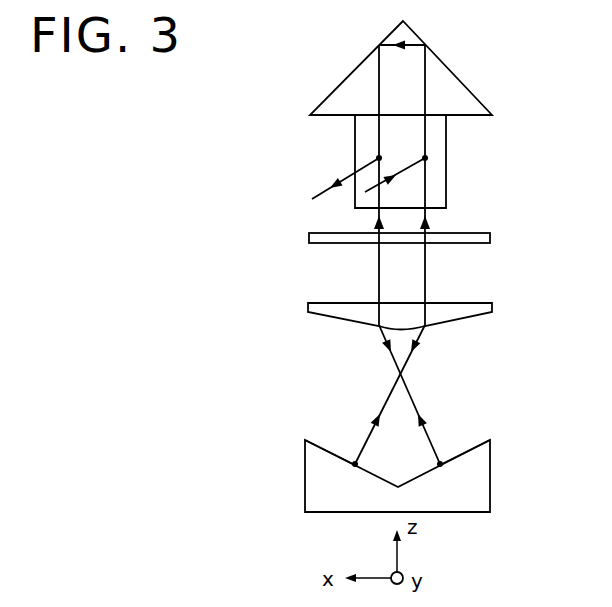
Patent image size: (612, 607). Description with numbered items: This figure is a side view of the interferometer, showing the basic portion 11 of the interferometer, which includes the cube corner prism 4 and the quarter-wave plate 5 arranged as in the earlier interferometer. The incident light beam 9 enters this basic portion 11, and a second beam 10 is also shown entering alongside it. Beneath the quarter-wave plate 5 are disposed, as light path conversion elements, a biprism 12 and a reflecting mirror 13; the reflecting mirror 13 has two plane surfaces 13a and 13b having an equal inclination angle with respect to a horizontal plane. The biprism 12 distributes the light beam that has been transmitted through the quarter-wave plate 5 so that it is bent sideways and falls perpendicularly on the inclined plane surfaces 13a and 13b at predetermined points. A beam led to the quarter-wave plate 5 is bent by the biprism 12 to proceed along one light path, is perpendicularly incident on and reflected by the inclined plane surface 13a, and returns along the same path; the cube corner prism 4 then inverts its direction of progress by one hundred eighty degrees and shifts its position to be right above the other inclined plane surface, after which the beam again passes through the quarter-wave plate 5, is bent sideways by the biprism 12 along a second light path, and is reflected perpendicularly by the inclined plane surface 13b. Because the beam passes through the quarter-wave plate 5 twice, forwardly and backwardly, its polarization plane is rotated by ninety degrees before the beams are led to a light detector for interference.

The cube corner prism 4 is at (443, 76).
The quarter-wave plate 5 is at (470, 234).
The incident light beam 9 is at (412, 172).
The light beam 10 is at (349, 173).
The basic portion 11 is at (515, 260).
The biprism 12 is at (338, 312).
The reflecting mirror 13 is at (343, 513).
The inclined plane surface 13a is at (323, 450).
The inclined plane surface 13b is at (468, 450).